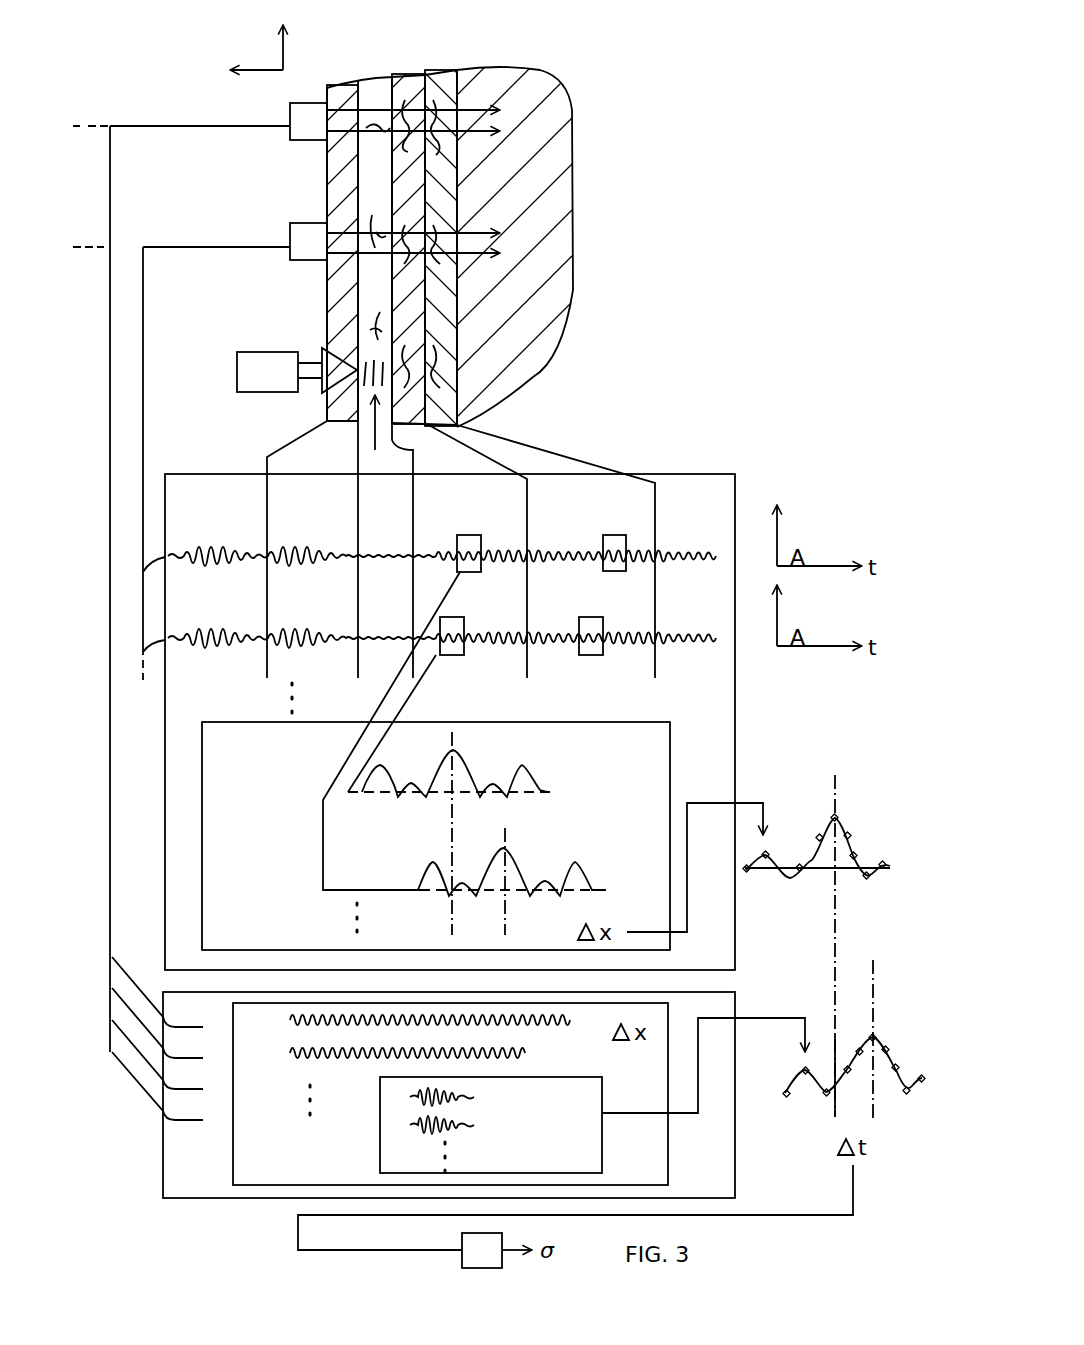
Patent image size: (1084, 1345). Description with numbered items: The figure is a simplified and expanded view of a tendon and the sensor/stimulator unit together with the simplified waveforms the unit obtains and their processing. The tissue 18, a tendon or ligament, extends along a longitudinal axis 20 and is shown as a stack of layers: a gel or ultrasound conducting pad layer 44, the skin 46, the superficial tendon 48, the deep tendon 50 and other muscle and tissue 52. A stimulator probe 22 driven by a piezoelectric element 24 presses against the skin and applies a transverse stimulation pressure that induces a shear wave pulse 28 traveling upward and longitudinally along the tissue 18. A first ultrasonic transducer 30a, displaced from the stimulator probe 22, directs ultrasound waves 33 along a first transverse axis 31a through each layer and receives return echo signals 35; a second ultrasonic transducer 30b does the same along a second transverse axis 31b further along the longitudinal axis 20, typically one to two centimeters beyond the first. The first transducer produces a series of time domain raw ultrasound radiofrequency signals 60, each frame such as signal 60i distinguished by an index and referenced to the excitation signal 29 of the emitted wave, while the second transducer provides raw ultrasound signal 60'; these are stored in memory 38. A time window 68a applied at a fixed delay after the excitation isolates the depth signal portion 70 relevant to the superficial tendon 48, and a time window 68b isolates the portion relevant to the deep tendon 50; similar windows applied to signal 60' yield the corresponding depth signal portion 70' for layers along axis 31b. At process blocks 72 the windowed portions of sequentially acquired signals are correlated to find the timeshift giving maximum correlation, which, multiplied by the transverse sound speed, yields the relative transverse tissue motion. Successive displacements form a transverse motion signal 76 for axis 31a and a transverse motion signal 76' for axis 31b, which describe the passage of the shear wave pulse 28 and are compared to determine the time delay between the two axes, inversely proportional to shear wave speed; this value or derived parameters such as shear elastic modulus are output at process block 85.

The tissue 18 is at (190, 78).
The longitudinal axis 20 is at (280, 34).
The gel or ultrasound conducting pad layer 44 is at (340, 72).
The skin 46 is at (377, 70).
The superficial tendon 48 is at (410, 70).
The deep tendon 50 is at (440, 66).
The other muscle and tissue 52 is at (524, 86).
The second ultrasonic transducer 30b is at (290, 112).
The first ultrasonic transducer 30a is at (290, 232).
The second transverse axis 31b is at (92, 128).
The first transverse axis 31a is at (92, 249).
The ultrasound waves 33 is at (473, 230).
The return echo signals 35 is at (465, 255).
The shear wave pulse 28 is at (440, 385).
The piezoelectric element 24 is at (265, 392).
The stimulator probe 22 is at (345, 380).
The raw ultrasound radiofrequency signals 60 is at (167, 463).
The excitation signal 29 is at (212, 520).
The first time window 68a is at (462, 617).
The second time window 68b is at (583, 617).
The i-th raw ultrasound signal 60i is at (685, 522).
The memory 38 is at (735, 940).
The correlation process block 72 is at (670, 735).
The depth signal portion 70 is at (466, 753).
The transverse motion signal 76 is at (816, 946).
The raw ultrasound signal from second transducer 60' is at (157, 1007).
The transverse motion signal at second axis 76' is at (854, 1040).
The depth signal portion of second-axis signals 70' is at (491, 1125).
The output process block 85 is at (495, 1263).